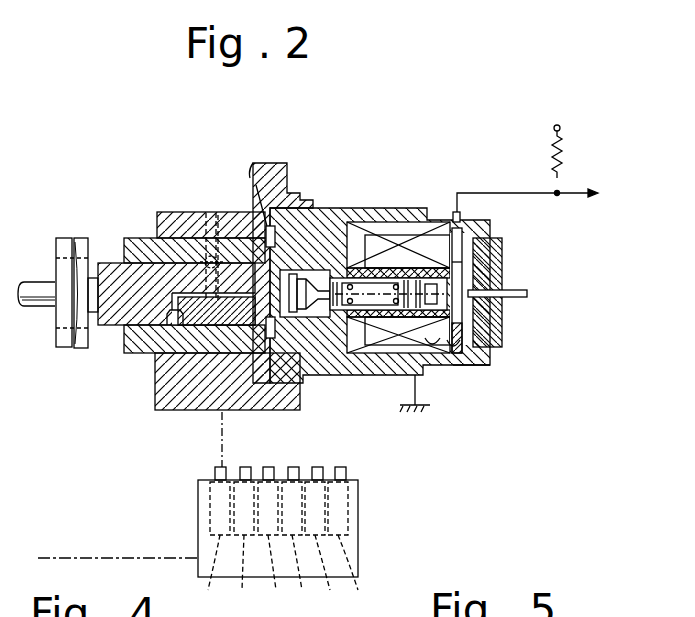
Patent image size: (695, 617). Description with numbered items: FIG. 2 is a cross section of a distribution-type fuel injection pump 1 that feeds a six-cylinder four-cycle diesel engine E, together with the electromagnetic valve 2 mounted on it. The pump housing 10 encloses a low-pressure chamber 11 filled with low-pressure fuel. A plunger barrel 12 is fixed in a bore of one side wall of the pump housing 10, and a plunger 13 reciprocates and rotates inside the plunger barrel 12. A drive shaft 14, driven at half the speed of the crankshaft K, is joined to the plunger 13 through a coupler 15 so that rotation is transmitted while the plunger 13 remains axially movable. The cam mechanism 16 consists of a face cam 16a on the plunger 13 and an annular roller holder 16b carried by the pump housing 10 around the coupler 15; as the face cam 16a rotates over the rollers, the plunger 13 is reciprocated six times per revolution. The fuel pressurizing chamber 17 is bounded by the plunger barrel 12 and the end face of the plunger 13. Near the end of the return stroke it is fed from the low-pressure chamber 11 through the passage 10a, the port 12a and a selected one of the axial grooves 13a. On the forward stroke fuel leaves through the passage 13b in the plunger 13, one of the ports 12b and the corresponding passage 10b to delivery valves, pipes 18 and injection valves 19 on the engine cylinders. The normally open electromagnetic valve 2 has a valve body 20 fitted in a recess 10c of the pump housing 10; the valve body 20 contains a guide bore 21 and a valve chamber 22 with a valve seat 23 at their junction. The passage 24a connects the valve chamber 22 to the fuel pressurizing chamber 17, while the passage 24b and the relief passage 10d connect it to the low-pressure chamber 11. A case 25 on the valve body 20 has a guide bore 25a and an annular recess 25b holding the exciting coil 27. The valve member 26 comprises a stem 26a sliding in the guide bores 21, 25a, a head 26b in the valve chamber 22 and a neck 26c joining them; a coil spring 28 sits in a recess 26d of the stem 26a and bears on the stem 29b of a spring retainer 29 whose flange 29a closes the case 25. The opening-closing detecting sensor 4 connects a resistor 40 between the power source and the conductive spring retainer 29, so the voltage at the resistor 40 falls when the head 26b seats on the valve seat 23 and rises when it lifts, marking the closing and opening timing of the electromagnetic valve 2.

The fuel injection pump 1 is at (369, 282).
The electromagnetic valve 2 is at (448, 196).
The opening-closing detecting sensor 4 is at (544, 143).
The pump housing 10 is at (258, 195).
The passage 10a is at (216, 258).
The passages 10b is at (160, 380).
The recess 10c is at (293, 209).
The relief passage 10d is at (260, 204).
The low-pressure chamber 11 is at (187, 215).
The plunger barrel 12 is at (130, 250).
The port 12a is at (188, 222).
The ports 12b is at (157, 352).
The plunger 13 is at (110, 265).
The axial grooves 13a is at (178, 225).
The passage 13b is at (118, 328).
The drive shaft 14 is at (38, 285).
The coupler 15 is at (32, 298).
The cam mechanism 16 is at (70, 362).
The face cam 16a is at (80, 242).
The roller holder 16b is at (58, 342).
The fuel pressurizing chamber 17 is at (260, 345).
The pipes 18 is at (220, 448).
The injection valves 19 is at (262, 466).
The valve body 20 is at (350, 226).
The guide bore 21 is at (372, 285).
The valve chamber 22 is at (290, 318).
The valve seat 23 is at (303, 276).
The passage 24a is at (355, 318).
The passage 24b is at (347, 270).
The case 25 is at (485, 362).
The guide bore 25a is at (430, 350).
The annular recess 25b is at (455, 352).
The valve member 26 is at (412, 312).
The stem 26a is at (375, 312).
The head 26b is at (358, 312).
The neck 26c is at (352, 340).
The recess 26d is at (390, 288).
The exciting coil 27 is at (453, 212).
The coil spring 28 is at (405, 240).
The spring retainer 29 is at (470, 272).
The flange 29a is at (457, 262).
The stem 29b is at (468, 292).
The resistor 40 is at (564, 165).
The diesel engine E is at (358, 503).
The crankshaft K is at (122, 557).